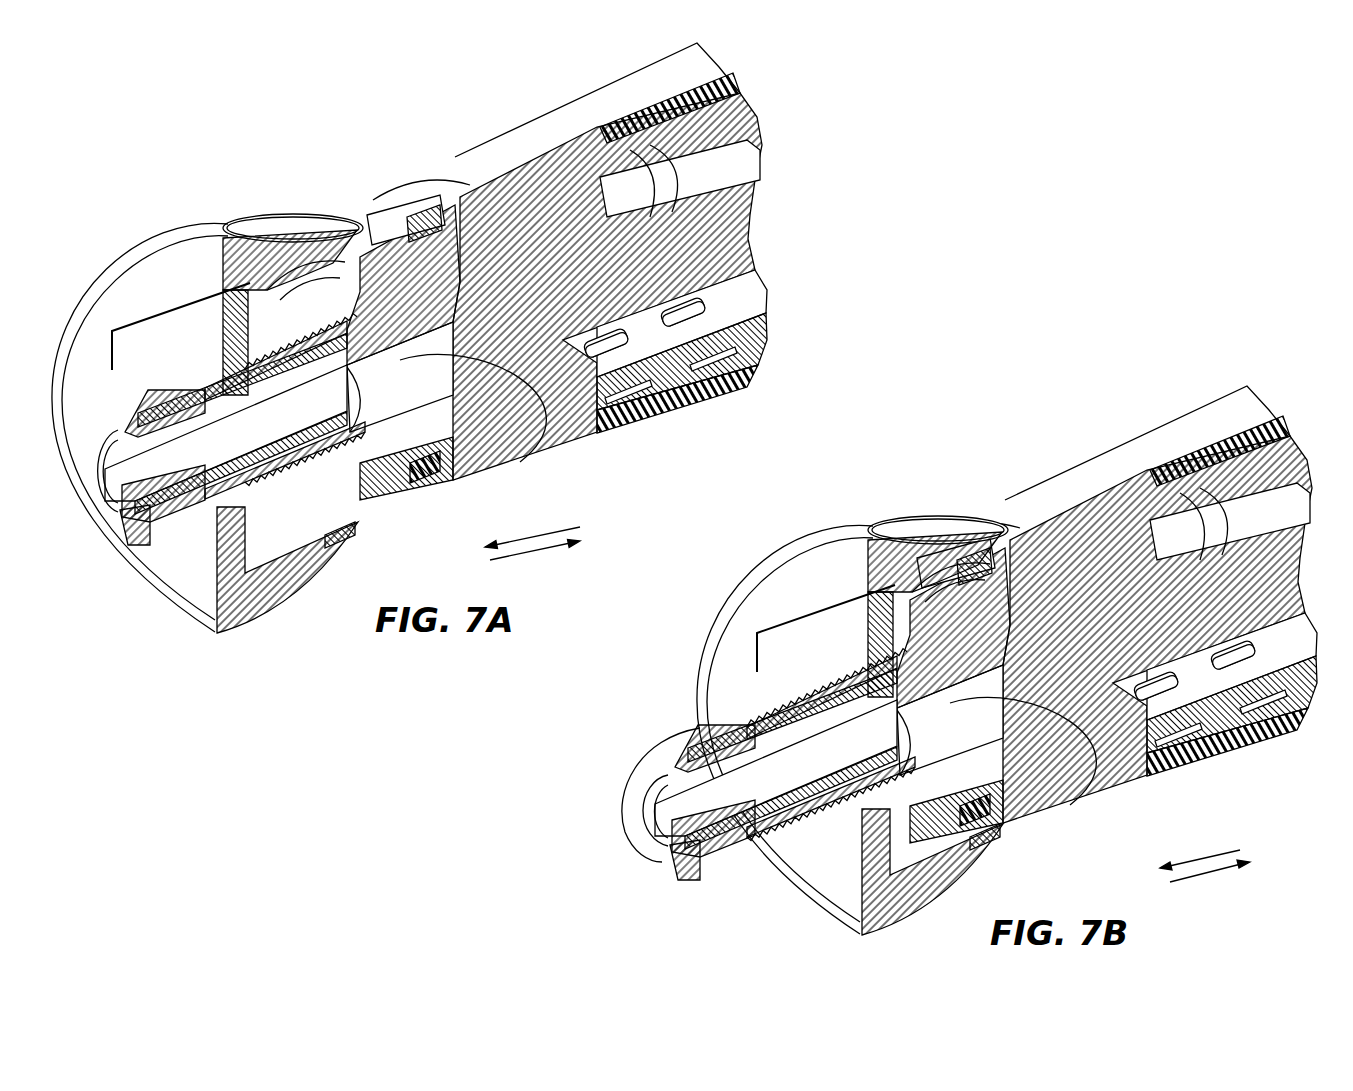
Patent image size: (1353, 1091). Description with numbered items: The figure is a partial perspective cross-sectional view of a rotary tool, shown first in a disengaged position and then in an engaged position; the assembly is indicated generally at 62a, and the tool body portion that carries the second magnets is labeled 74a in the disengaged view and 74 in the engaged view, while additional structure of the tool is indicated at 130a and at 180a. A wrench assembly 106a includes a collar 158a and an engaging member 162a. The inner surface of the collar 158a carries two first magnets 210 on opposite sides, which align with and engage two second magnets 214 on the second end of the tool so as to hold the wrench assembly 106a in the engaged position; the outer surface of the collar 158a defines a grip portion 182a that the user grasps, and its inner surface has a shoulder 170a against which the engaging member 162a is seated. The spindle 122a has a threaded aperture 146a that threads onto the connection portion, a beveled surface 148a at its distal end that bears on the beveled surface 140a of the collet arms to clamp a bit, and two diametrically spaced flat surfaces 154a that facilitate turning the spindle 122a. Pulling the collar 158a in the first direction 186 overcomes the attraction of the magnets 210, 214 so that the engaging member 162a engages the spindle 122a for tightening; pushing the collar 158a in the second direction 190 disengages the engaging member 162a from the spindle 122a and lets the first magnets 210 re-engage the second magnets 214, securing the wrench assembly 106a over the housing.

In FIG. 7A, the surgical instrument 62a is at (86, 378).
In FIG. 7B, the surgical instrument 62a is at (618, 737).
In FIG. 7A, the handle body 74a is at (651, 103).
In FIG. 7B, the handle body 74 is at (1203, 447).
In FIG. 7A, the wrench assembly 106a is at (276, 196).
In FIG. 7B, the wrench assembly 106a is at (845, 514).
In FIG. 7A, the spindle 122a is at (103, 510).
In FIG. 7B, the spindle 122a is at (650, 853).
In FIG. 7A, the pocket 130a is at (400, 360).
In FIG. 7B, the pocket 130a is at (950, 703).
In FIG. 7A, the beveled surface 140a is at (155, 421).
In FIG. 7B, the beveled surface 140a is at (690, 740).
In FIG. 7A, the threaded aperture 146a is at (244, 364).
In FIG. 7B, the threaded aperture 146a is at (827, 653).
In FIG. 7A, the beveled surface 148a is at (171, 526).
In FIG. 7B, the beveled surface 148a is at (723, 853).
In FIG. 7A, the flat surfaces 154a is at (197, 369).
In FIG. 7B, the flat surfaces 154a is at (750, 720).
In FIG. 7A, the collar 158a is at (197, 254).
In FIG. 7B, the collar 158a is at (762, 590).
In FIG. 7A, the engaging member 162a is at (202, 547).
In FIG. 7B, the engaging member 162a is at (840, 847).
In FIG. 7A, the shoulder 170a is at (265, 300).
In FIG. 7B, the shoulder 170a is at (880, 620).
In FIG. 7A, the flange 180a is at (213, 359).
In FIG. 7B, the flange 180a is at (862, 640).
In FIG. 7A, the grip portion 182a is at (317, 223).
In FIG. 7B, the grip portion 182a is at (950, 517).
In FIG. 7A, the first direction 186 is at (535, 522).
In FIG. 7B, the first direction 186 is at (1210, 842).
In FIG. 7A, the second direction 190 is at (546, 555).
In FIG. 7B, the second direction 190 is at (1222, 874).
In FIG. 7A, the first magnets 210 is at (333, 217).
In FIG. 7B, the first magnets 210 is at (930, 560).
In FIG. 7A, the second magnets 214 is at (416, 213).
In FIG. 7B, the second magnets 214 is at (1033, 520).